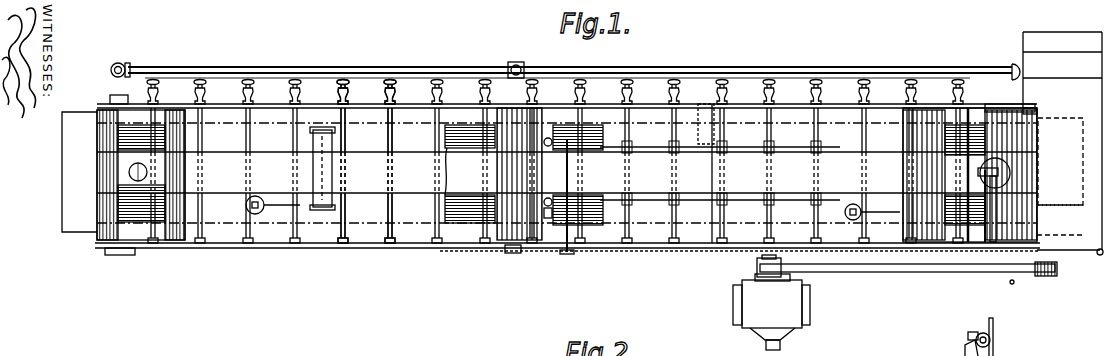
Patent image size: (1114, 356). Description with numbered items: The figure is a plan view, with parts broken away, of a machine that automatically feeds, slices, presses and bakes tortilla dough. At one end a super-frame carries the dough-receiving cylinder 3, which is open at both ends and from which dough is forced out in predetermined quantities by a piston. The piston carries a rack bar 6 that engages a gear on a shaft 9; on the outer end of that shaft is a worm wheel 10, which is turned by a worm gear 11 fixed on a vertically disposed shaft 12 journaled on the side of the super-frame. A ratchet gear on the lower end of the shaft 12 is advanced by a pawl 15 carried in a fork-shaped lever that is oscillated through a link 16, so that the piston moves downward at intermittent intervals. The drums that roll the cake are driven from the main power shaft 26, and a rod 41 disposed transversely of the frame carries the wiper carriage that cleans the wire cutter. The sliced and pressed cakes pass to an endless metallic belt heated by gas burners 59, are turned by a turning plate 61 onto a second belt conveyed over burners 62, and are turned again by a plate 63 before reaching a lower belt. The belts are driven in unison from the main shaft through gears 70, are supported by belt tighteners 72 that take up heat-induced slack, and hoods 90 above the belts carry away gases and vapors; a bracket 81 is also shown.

In FIG. 1, the turning plate 61 is at (62, 172).
In FIG. 1, the hoods 90 is at (170, 223).
In FIG. 1, the belt tighteners 72 is at (285, 207).
In FIG. 1, the gas burners 59 is at (384, 96).
In FIG. 1, the burners 62 is at (772, 95).
In FIG. 1, the bracket 81 is at (712, 124).
In FIG. 1, the gears 70 is at (1034, 112).
In FIG. 1, the rod 41 is at (1030, 130).
In FIG. 1, the cylinder 3 is at (1008, 172).
In FIG. 1, the plate 63 is at (1060, 188).
In FIG. 1, the main power shaft 26 is at (1013, 284).
In FIG. 2, the rack bar 6 is at (995, 327).
In FIG. 2, the shaft 9 is at (992, 342).
In FIG. 2, the worm wheel 10 is at (987, 335).
In FIG. 2, the worm gear 11 is at (970, 348).
In FIG. 2, the pawl 15 is at (950, 355).
In FIG. 2, the link 16 is at (945, 355).
In FIG. 2, the shaft 12 is at (972, 355).